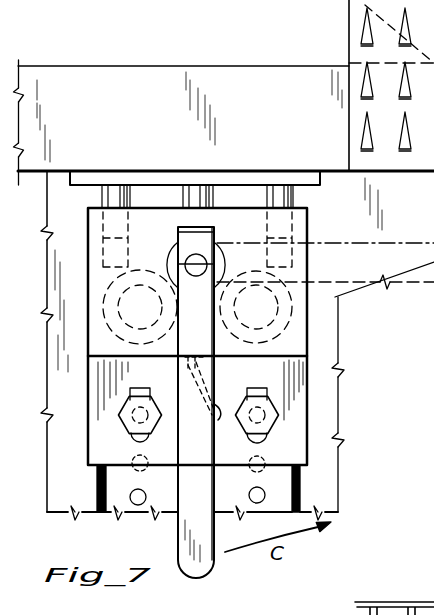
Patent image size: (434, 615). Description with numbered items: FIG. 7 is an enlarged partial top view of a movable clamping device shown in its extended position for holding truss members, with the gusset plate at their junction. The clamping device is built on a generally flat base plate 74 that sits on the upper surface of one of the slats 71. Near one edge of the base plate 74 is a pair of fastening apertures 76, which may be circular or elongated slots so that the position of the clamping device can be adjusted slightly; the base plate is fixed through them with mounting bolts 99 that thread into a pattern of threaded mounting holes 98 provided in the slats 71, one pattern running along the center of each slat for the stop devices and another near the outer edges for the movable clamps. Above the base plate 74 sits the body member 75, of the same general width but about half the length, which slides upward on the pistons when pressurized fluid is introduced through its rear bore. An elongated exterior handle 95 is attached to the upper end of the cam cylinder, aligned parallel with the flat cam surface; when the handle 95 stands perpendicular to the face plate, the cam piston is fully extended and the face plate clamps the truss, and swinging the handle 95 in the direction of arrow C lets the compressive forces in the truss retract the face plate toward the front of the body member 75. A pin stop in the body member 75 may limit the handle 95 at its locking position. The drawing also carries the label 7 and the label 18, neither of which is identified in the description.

The upper panel 18 is at (235, 78).
The panel assembly 7 is at (349, 25).
The slats 71 is at (433, 213).
The base plate 74 is at (300, 390).
The body member 75 is at (335, 297).
The apertures 76 is at (136, 391).
The handle 95 is at (433, 290).
The threaded mounting holes 98 is at (130, 494).
The mounting bolts 99 is at (268, 415).